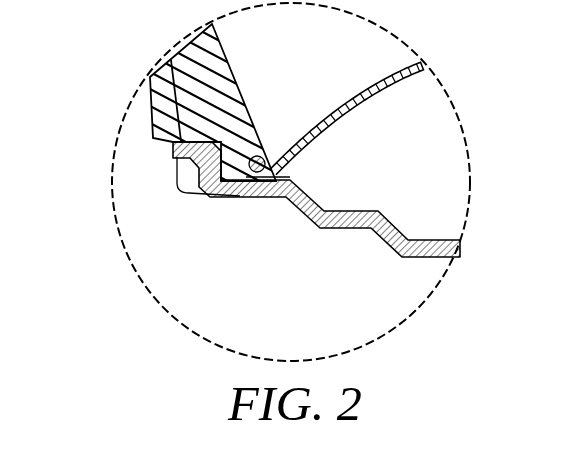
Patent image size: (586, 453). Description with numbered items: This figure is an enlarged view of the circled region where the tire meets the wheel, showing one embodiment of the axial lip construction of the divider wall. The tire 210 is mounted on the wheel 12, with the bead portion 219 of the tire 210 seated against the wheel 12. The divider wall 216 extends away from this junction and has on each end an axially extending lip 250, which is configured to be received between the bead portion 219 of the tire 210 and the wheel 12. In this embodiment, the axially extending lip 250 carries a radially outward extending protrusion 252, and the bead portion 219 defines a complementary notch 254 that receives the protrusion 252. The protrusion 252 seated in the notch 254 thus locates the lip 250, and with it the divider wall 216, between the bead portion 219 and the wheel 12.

The wheel 12 is at (423, 247).
The tire 210 is at (171, 70).
The divider wall 216 is at (417, 64).
The bead portion 219 is at (253, 135).
The axially extending lip 250 is at (244, 194).
The radially outward extending protrusion 252 is at (268, 158).
The complementary notch 254 is at (265, 174).